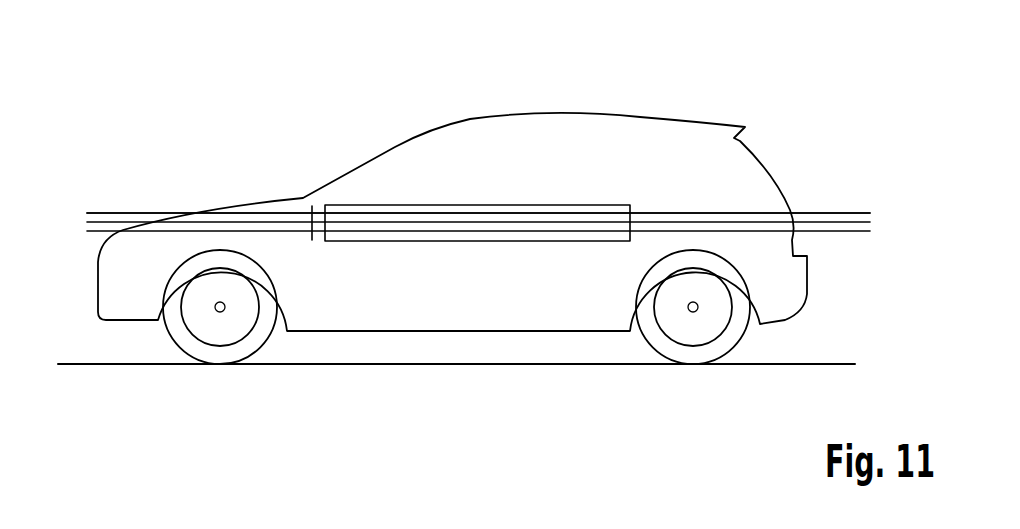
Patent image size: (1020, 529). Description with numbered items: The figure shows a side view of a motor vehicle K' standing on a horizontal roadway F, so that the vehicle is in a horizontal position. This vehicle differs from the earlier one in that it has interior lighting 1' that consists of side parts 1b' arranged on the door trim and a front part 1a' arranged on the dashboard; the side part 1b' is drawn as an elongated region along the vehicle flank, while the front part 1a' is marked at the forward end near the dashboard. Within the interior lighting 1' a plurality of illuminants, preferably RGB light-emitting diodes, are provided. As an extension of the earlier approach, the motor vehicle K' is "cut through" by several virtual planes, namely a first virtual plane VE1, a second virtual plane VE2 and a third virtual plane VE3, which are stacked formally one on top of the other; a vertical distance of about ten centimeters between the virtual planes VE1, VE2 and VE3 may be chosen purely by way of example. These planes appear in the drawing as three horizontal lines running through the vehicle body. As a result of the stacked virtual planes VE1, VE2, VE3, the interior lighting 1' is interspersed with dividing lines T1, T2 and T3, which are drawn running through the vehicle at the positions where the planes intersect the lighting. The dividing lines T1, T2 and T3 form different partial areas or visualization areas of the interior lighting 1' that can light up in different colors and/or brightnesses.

The interior lighting 1' is at (478, 169).
The front part 1a' is at (269, 197).
The side parts 1b' is at (477, 186).
The motor vehicle K' is at (452, 190).
The dividing line T1 is at (400, 213).
The dividing line T2 is at (438, 242).
The dividing line T3 is at (438, 242).
The virtual plane VE1 is at (822, 213).
The virtual plane VE2 is at (870, 222).
The virtual plane VE3 is at (858, 232).
The horizontal roadway F is at (597, 366).